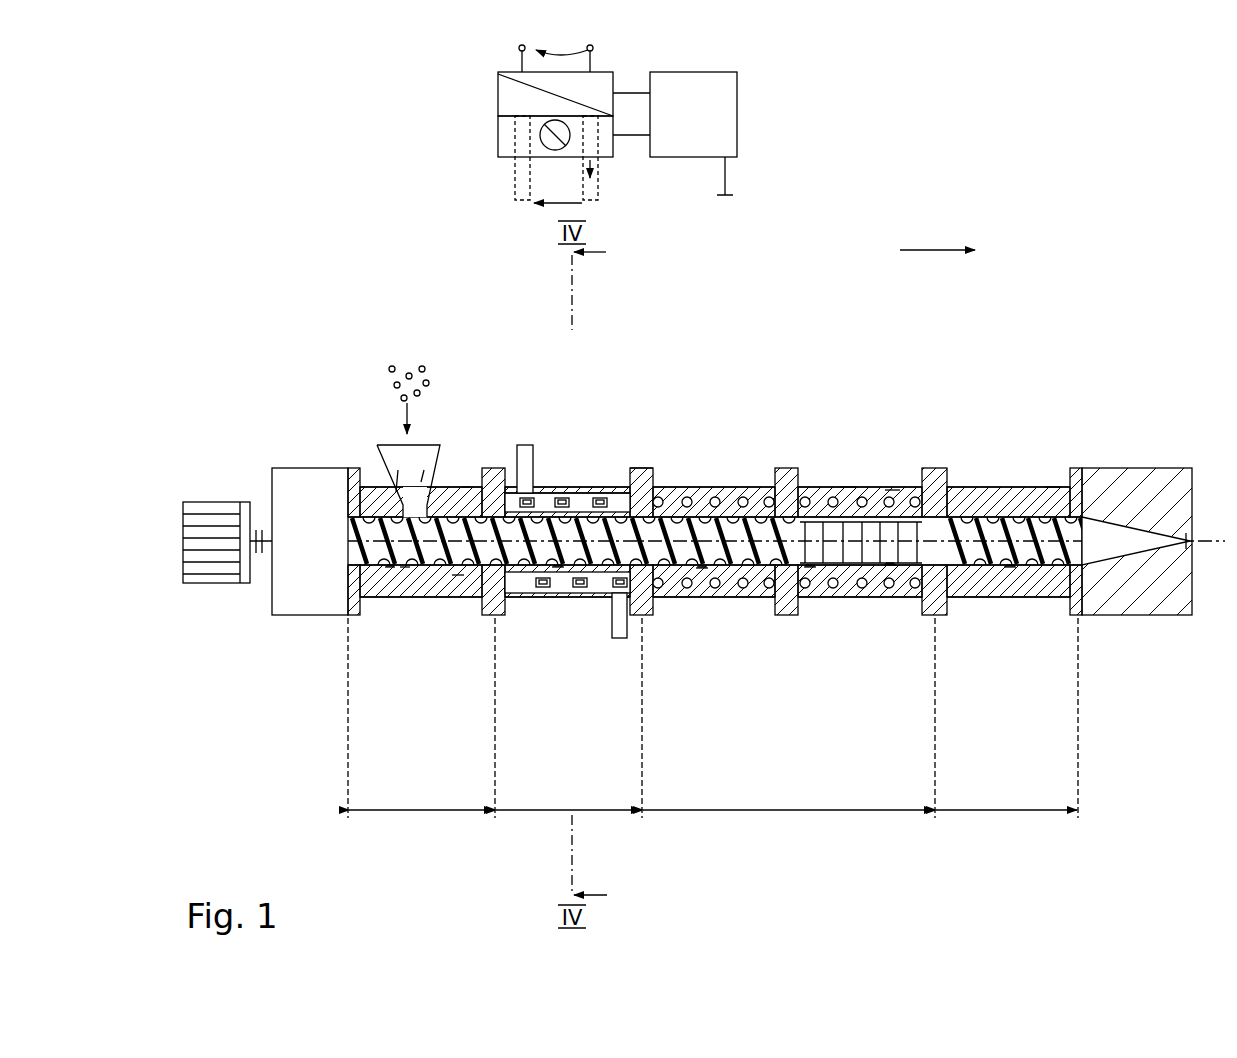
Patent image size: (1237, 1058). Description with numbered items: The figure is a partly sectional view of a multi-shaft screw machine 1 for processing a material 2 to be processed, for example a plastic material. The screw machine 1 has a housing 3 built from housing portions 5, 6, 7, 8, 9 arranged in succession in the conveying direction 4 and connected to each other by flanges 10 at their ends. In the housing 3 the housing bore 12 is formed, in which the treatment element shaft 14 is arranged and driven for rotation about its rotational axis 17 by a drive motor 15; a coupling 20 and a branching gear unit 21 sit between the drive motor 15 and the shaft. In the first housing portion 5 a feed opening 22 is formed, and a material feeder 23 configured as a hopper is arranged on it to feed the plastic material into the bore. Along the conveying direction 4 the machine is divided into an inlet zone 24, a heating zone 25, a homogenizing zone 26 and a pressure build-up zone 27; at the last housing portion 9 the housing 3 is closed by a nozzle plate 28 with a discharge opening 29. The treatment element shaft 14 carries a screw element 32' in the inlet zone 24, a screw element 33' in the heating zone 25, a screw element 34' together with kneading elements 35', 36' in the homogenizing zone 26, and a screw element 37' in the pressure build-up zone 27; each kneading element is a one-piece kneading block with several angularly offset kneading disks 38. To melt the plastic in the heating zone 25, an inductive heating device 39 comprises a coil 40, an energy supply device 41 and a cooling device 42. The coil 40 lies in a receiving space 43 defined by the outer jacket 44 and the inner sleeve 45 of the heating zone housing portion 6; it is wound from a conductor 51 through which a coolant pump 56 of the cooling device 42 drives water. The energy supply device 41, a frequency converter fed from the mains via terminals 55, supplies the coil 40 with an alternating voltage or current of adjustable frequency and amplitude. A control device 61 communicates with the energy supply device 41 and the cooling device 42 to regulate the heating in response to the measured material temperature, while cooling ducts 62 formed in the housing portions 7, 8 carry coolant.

The screw machine 1 is at (804, 272).
The material to be processed 2 is at (407, 378).
The housing 3 is at (880, 487).
The conveying direction 4 is at (932, 250).
The first housing portion 5 is at (463, 487).
The heating zone housing portion 6 is at (596, 493).
The housing portion 7 is at (848, 484).
The housing portion 8 is at (893, 490).
The last housing portion 9 is at (1053, 487).
The flanges 10 is at (491, 470).
The housing bore 12 is at (405, 567).
The treatment element shaft 14 is at (1047, 567).
The drive motor 15 is at (210, 502).
The rotational axis 17 is at (458, 575).
The coupling 20 is at (258, 532).
The branching gear unit 21 is at (308, 470).
The feed opening 22 is at (420, 480).
The material feeder 23 is at (395, 490).
The inlet zone 24 is at (421, 792).
The heating zone 25 is at (568, 792).
The homogenizing zone 26 is at (788, 792).
The pressure build-up zone 27 is at (1006, 792).
The nozzle plate 28 is at (1130, 478).
The discharge opening 29 is at (1188, 470).
The screw element 32' is at (375, 631).
The screw element 33' is at (553, 631).
The screw element 34' is at (688, 631).
The kneading element 35' is at (803, 631).
The kneading element 36' is at (907, 630).
The screw element 37' is at (997, 631).
The kneading disks 38 is at (833, 567).
The inductive heating device 39 is at (508, 199).
The coil 40 is at (637, 470).
The energy supply device 41 is at (496, 91).
The cooling device 42 is at (496, 138).
The receiving space 43 is at (600, 587).
The outer jacket 44 is at (609, 489).
The inner sleeve 45 is at (530, 584).
The conductor 51 is at (575, 476).
The terminals 55 is at (587, 49).
The coolant pump 56 is at (548, 128).
The control device 61 is at (738, 96).
The cooling ducts 62 is at (925, 470).